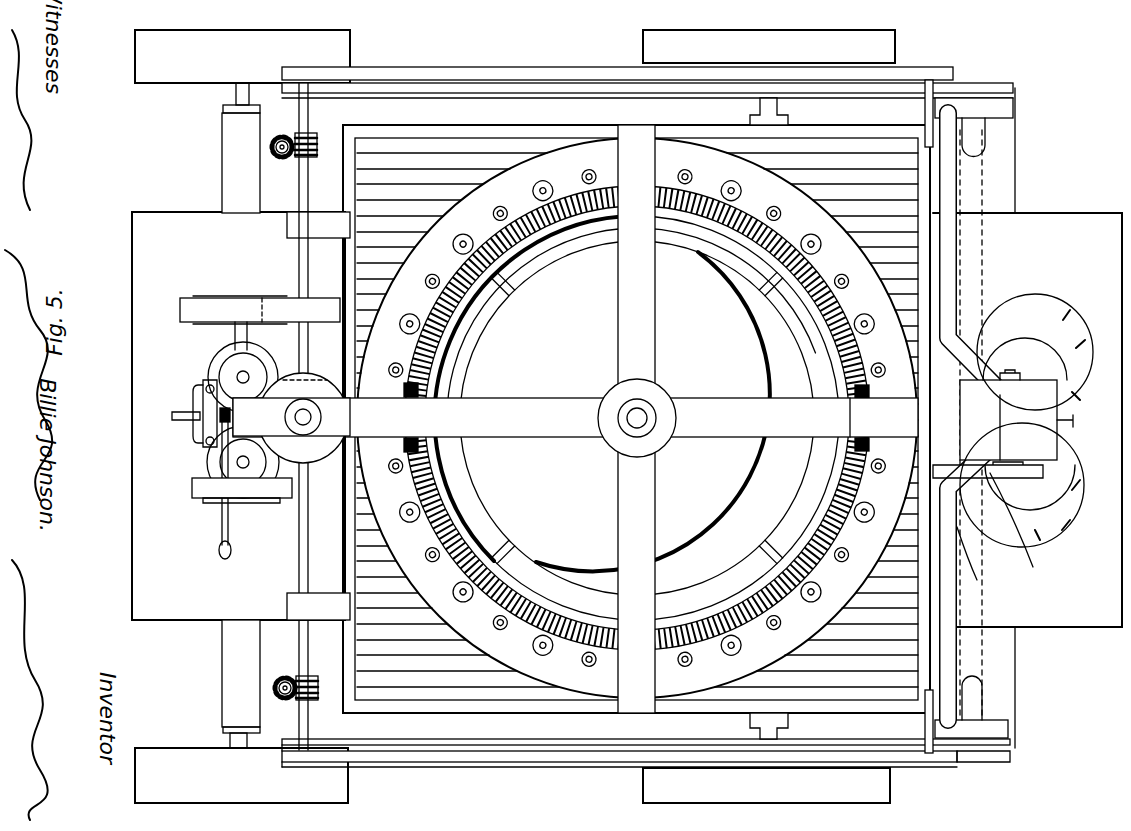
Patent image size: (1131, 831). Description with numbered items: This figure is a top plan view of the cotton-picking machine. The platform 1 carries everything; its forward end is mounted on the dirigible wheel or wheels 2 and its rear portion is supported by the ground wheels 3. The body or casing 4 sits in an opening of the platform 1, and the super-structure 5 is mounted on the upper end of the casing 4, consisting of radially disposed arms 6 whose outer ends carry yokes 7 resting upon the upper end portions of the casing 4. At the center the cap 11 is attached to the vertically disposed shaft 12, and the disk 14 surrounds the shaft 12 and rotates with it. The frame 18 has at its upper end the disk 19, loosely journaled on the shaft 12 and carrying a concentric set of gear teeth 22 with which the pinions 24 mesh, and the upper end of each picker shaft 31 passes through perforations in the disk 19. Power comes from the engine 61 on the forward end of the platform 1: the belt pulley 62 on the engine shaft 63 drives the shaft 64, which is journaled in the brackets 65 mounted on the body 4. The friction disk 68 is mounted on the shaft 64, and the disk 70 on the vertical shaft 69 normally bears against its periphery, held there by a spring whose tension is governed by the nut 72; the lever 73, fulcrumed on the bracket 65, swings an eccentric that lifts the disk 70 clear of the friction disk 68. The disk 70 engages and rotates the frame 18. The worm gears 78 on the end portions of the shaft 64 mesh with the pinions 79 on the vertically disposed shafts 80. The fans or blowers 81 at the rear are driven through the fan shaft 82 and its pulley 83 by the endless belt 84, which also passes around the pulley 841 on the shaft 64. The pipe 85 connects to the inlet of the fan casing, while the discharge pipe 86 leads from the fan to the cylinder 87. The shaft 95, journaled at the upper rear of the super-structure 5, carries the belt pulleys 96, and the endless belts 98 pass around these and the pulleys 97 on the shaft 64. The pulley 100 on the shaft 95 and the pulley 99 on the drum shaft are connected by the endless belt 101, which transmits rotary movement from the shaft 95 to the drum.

The platform 1 is at (165, 588).
The dirigible wheel 2 is at (196, 70).
The ground wheels 3 is at (643, 42).
The body or casing 4 is at (470, 690).
The super-structure 5 is at (623, 150).
The radially disposed arms 6 is at (530, 402).
The yokes 7 is at (420, 418).
The cap 11 is at (660, 425).
The vertically disposed shaft 12 is at (640, 414).
The disk 14 is at (735, 552).
The frame 18 is at (513, 627).
The upper disk 19 is at (713, 617).
The gear teeth 22 is at (575, 645).
The pinions 24 is at (420, 393).
The picker shaft 31 is at (550, 690).
The engine 61 is at (253, 310).
The belt pulley 62 is at (207, 298).
The engine shaft 63 is at (236, 340).
The shaft 64 is at (300, 565).
The brackets 65 is at (297, 605).
The friction disk 68 is at (323, 370).
The vertical shaft 69 is at (345, 412).
The disk 70 is at (307, 462).
The nut 72 is at (285, 417).
The lever 73 is at (216, 527).
The worm gears 78 is at (318, 138).
The pinions 79 is at (275, 155).
The vertically disposed shafts 80 is at (273, 145).
The fans or blowers 81 is at (975, 742).
The fan shaft 82 is at (980, 740).
The fan pulley 83 is at (1013, 748).
The endless belt 84 is at (450, 90).
The pulley 841 is at (285, 750).
The pipe 85 is at (975, 145).
The discharge pipe 86 is at (1000, 425).
The cylinder 87 is at (1025, 375).
The shaft 95 is at (925, 110).
The belt pulleys 96 is at (957, 766).
The pulleys 97 is at (330, 770).
The endless belts 98 is at (455, 768).
The pulley 99 is at (1010, 462).
The pulley 100 is at (977, 580).
The endless belt 101 is at (1033, 567).